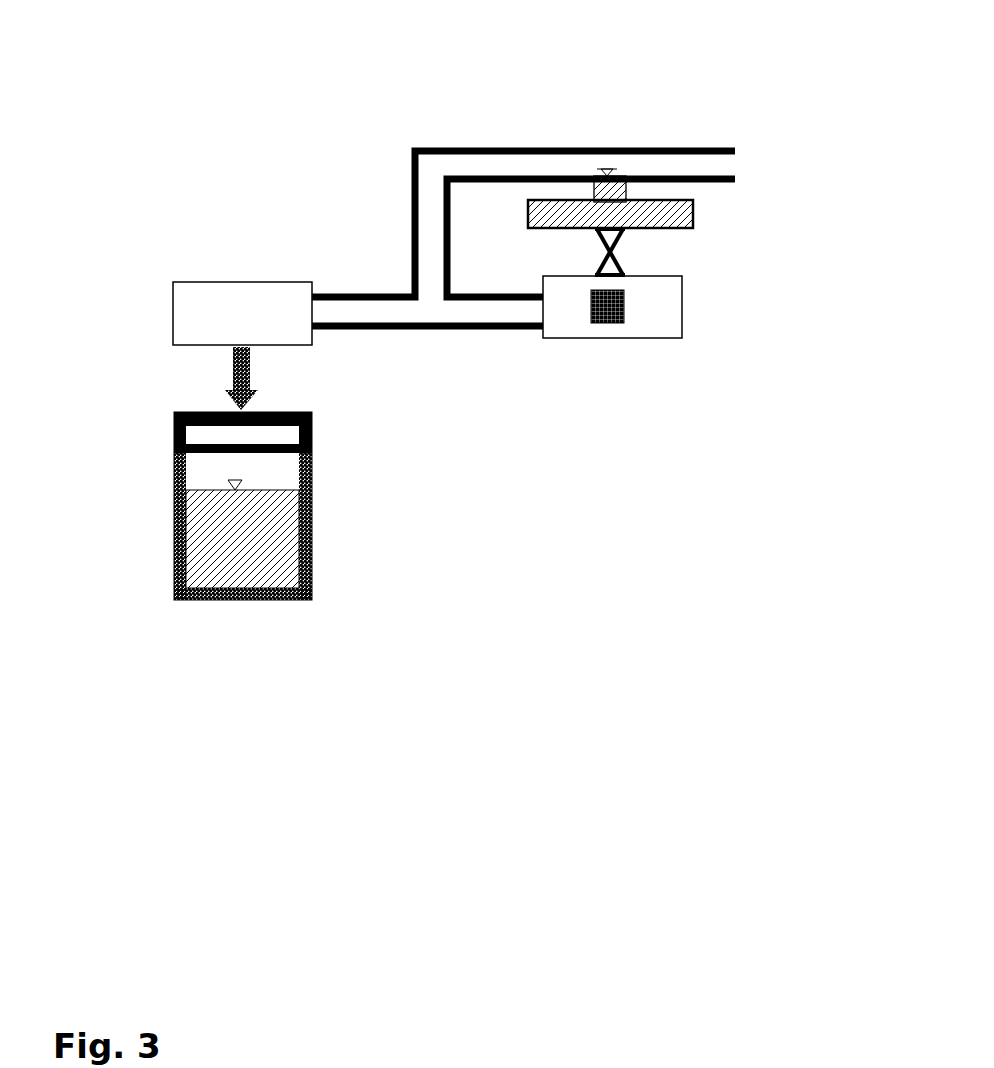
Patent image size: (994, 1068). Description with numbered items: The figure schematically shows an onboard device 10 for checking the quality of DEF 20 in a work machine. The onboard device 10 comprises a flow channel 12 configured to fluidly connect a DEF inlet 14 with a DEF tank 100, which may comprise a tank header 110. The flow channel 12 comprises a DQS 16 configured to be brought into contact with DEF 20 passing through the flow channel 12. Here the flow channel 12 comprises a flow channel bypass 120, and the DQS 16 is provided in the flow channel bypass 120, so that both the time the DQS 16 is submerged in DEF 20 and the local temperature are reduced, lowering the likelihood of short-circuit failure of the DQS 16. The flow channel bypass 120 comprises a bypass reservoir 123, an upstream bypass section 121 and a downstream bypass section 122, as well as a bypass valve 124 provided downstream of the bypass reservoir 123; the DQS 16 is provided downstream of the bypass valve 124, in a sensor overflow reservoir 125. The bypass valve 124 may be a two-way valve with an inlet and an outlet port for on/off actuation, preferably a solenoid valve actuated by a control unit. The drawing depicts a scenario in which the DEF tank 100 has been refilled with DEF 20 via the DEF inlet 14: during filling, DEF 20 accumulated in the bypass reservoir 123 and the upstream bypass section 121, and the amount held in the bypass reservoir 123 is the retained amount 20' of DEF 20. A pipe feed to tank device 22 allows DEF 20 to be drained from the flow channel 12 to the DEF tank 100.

The onboard device 10 is at (466, 112).
The flow channel 12 is at (413, 213).
The DEF inlet 14 is at (733, 167).
The DQS 16 is at (607, 312).
The DEF 20 is at (178, 570).
The retained amount of DEF 20' is at (617, 140).
The pipe feed to tank device 22 is at (237, 305).
The DEF tank 100 is at (207, 540).
The tank header 110 is at (200, 438).
The flow channel bypass 120 is at (659, 262).
The upstream bypass section 121 is at (587, 174).
The downstream bypass section 122 is at (512, 312).
The bypass reservoir 123 is at (693, 229).
The bypass valve 124 is at (600, 230).
The sensor overflow reservoir 125 is at (562, 328).